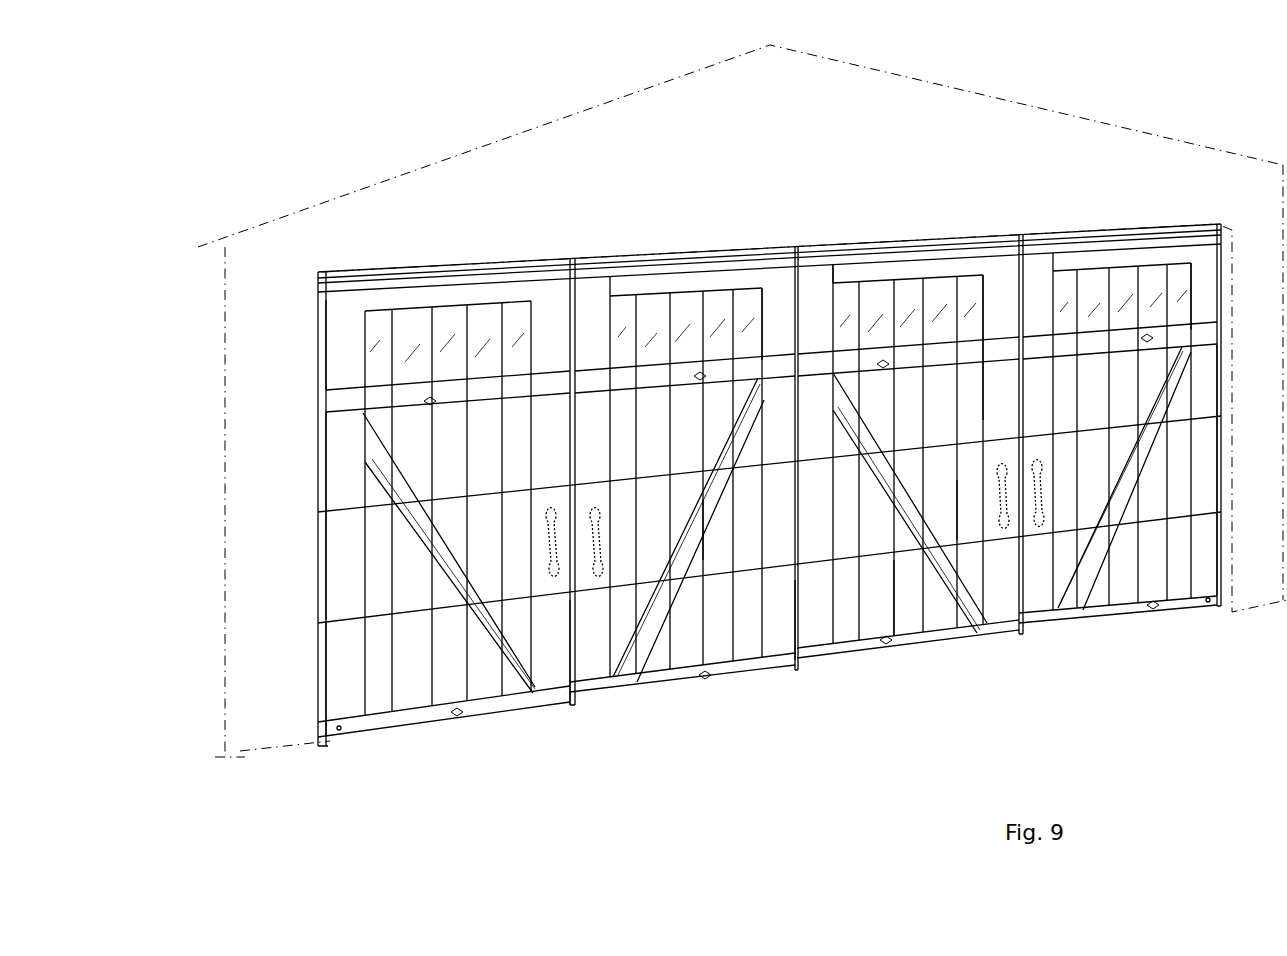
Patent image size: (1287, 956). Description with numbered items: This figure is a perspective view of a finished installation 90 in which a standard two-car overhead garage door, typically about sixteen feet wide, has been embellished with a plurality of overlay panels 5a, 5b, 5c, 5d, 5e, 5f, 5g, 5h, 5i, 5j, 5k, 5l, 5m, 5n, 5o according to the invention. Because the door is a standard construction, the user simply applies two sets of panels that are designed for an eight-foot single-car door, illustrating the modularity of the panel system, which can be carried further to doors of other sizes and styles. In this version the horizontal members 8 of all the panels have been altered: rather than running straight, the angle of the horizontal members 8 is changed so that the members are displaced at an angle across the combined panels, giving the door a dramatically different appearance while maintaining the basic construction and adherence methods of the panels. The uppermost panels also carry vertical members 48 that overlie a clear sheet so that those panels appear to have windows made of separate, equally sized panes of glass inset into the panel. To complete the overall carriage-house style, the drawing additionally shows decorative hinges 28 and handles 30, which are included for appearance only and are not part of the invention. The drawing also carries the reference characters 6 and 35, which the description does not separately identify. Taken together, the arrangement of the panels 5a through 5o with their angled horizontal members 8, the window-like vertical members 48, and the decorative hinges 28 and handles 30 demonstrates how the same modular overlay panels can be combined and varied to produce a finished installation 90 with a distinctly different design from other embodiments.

The panel 5a is at (333, 345).
The panel 5b is at (338, 483).
The panel 5c is at (340, 577).
The panel 5d is at (343, 693).
The panel 5e is at (773, 303).
The panel 5f is at (908, 590).
The panel 5g is at (718, 537).
The panel 5h is at (782, 612).
The panel 5i is at (936, 267).
The panel 5j is at (1002, 390).
The panel 5k is at (967, 508).
The panel 5l is at (1203, 270).
The panel 5m is at (1210, 382).
The panel 5n is at (1205, 482).
The panel 5o is at (1215, 568).
The door stile 6 is at (559, 668).
The horizontal members 8 is at (462, 566).
The decorative hinges 28 is at (778, 670).
The handles 30 is at (1035, 505).
The building opening outline 35 is at (517, 186).
The vertical members 48 is at (1163, 280).
The finished installation 90 is at (880, 166).